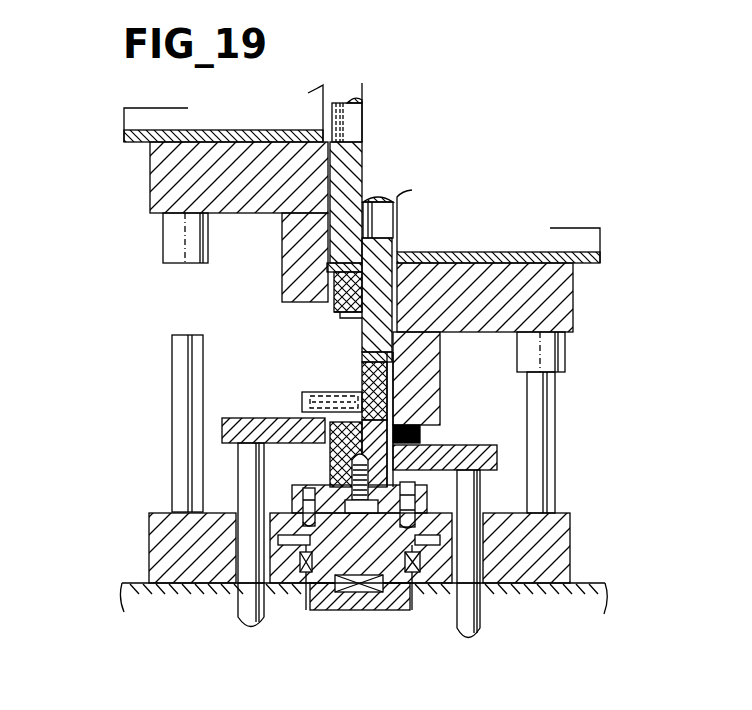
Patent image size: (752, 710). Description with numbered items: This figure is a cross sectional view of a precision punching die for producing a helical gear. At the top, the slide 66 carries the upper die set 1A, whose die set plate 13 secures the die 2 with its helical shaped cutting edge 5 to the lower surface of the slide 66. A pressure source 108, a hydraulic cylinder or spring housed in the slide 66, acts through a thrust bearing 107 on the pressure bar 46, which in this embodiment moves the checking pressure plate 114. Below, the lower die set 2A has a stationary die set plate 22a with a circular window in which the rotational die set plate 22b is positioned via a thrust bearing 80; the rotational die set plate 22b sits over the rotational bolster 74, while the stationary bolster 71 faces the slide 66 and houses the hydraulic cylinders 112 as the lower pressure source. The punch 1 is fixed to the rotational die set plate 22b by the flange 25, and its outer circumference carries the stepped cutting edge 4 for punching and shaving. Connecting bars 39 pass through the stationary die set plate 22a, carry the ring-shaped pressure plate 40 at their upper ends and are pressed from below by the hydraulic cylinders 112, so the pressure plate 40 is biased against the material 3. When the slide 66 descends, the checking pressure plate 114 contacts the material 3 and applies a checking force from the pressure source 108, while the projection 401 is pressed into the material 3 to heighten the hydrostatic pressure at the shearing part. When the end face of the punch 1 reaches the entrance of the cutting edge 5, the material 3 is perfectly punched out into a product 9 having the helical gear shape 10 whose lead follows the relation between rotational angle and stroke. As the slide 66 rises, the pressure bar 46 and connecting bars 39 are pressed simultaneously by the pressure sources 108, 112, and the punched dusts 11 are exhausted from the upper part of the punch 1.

The slide 66 is at (135, 126).
The die set plate 13 is at (152, 183).
The upper die set 1A is at (246, 219).
The die 2 is at (284, 262).
The pressure bar 46 is at (350, 193).
The pressure source 108 is at (362, 98).
The thrust bearing 107 is at (330, 268).
The cutting edge 5 is at (336, 312).
The checking pressure plate 114 is at (355, 318).
The product 9 is at (393, 405).
The helical gear shape 10 is at (390, 416).
The punched dusts 11 is at (420, 434).
The material 3 is at (305, 390).
The projection 401 is at (302, 402).
The pressure plate 40 is at (225, 420).
The punch 1 is at (340, 460).
The flange 25 is at (295, 498).
The cutting edge 4 is at (336, 480).
The connecting bar 39 is at (242, 457).
The hydraulic cylinder 112 is at (245, 607).
The lower die set 2A is at (155, 498).
The stationary die set plate 22a is at (152, 545).
The rotational die set plate 22b is at (307, 614).
The thrust bearing 80 is at (420, 590).
The rotational bolster 74 is at (390, 600).
The stationary bolster 71 is at (158, 595).